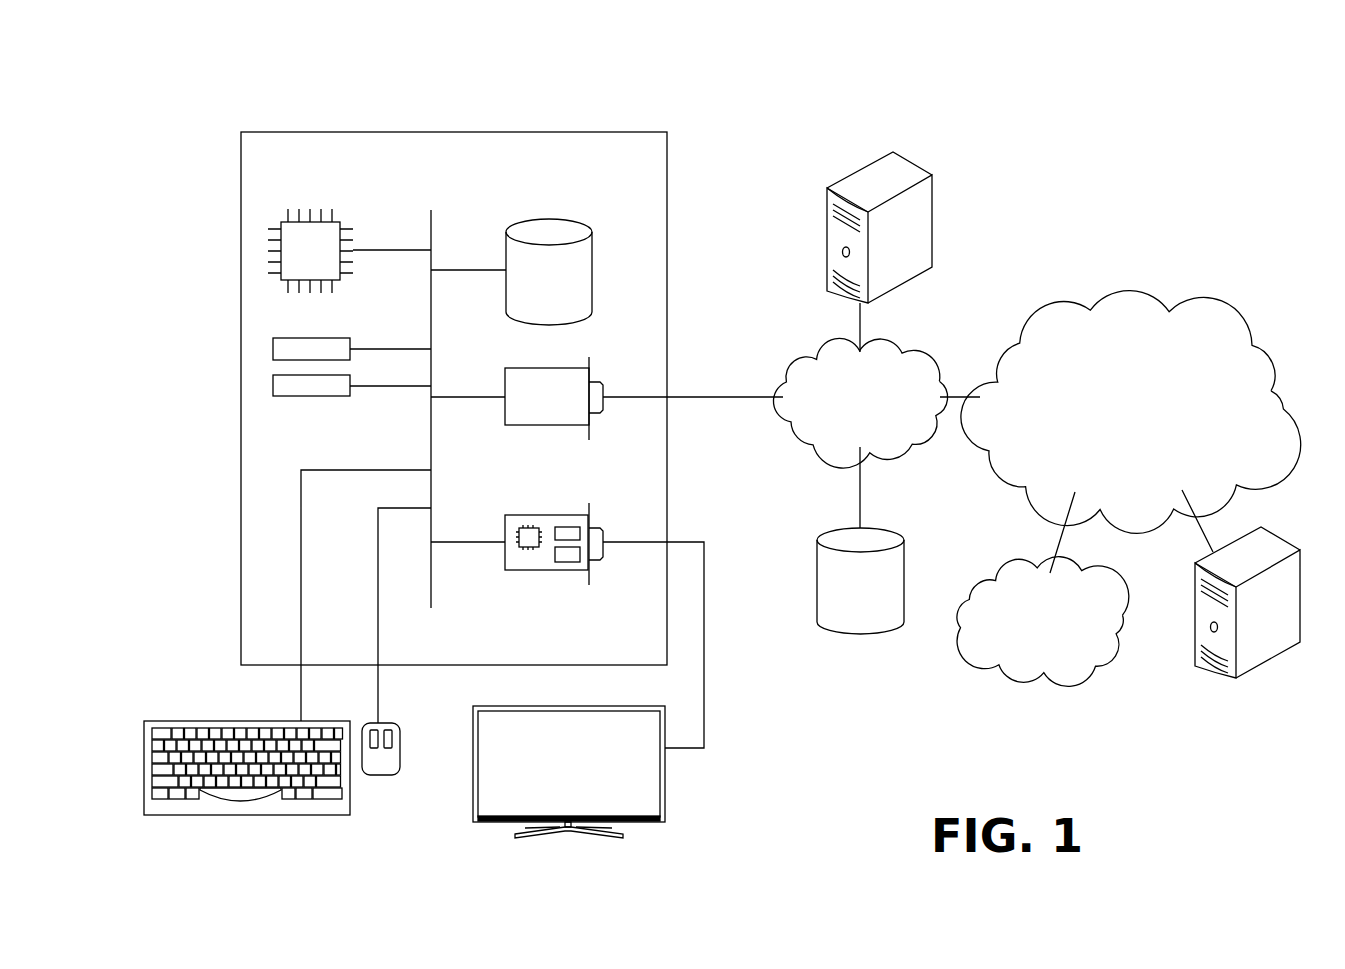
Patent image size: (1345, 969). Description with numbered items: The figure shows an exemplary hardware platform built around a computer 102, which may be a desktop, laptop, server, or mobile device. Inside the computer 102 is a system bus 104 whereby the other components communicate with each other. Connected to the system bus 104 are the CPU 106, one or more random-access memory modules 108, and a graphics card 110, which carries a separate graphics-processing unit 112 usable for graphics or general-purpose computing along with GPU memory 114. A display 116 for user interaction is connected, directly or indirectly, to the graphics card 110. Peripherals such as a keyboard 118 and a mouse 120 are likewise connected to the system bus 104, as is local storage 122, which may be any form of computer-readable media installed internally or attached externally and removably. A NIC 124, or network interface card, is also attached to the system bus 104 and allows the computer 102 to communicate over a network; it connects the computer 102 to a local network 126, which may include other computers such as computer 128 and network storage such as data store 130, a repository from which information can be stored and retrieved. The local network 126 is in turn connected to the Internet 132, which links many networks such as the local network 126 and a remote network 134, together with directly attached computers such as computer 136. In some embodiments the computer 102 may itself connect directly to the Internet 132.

The computer 102 is at (620, 131).
The system bus 104 is at (433, 221).
The CPU 106 is at (337, 218).
The random-access memory modules 108 is at (352, 383).
The graphics card 110 is at (504, 527).
The graphics-processing unit 112 is at (529, 549).
The GPU memory 114 is at (565, 563).
The display 116 is at (668, 803).
The keyboard 118 is at (250, 816).
The mouse 120 is at (378, 777).
The local storage 122 is at (592, 252).
The NIC 124 is at (504, 379).
The local network 126 is at (912, 353).
The computer 128 is at (918, 162).
The data store 130 is at (897, 532).
The Internet 132 is at (1183, 320).
The remote network 134 is at (1103, 575).
The computer 136 is at (1272, 530).